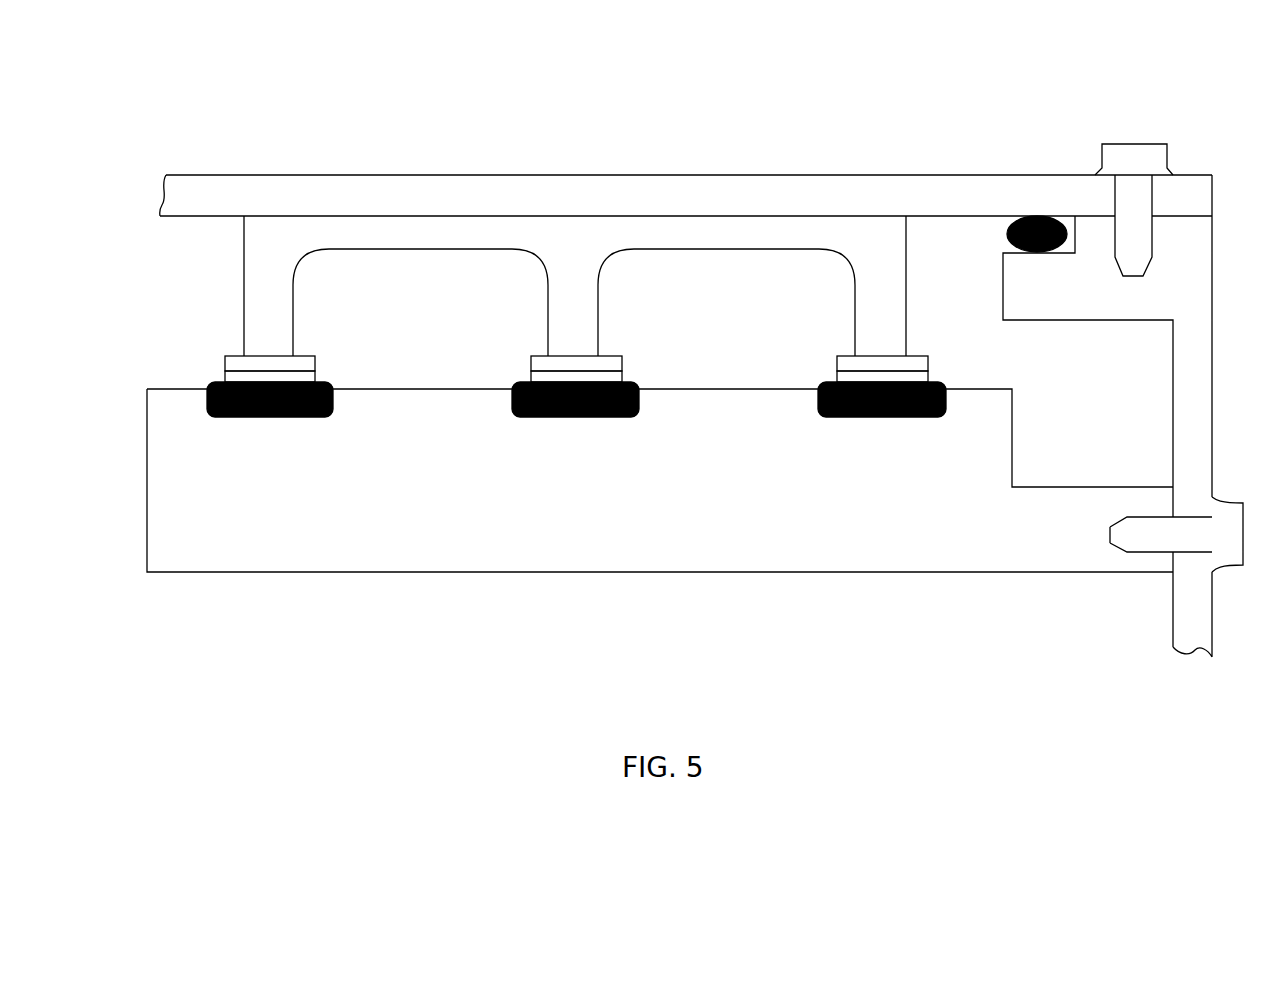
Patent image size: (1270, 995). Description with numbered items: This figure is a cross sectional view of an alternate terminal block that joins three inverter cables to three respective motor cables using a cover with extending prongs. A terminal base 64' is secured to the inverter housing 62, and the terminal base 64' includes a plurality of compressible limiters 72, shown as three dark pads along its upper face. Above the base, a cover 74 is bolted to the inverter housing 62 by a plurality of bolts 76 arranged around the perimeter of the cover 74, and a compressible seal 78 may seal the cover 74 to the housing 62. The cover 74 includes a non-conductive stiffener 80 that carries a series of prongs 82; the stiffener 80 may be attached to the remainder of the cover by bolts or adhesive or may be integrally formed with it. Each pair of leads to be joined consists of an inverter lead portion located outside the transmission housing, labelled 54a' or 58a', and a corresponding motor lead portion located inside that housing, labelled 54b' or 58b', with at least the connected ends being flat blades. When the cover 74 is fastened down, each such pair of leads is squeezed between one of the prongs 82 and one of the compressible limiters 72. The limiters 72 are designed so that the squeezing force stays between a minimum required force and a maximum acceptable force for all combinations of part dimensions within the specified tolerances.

The cover 74 is at (908, 175).
The bolts 76 is at (1140, 143).
The compressible seal 78 is at (1037, 214).
The inverter housing 62 is at (1127, 320).
The terminal base 64' is at (660, 521).
The inverter lead portion 54a' is at (204, 330).
The inverter lead portion 58a' is at (204, 330).
The motor lead portion 54b' is at (621, 343).
The motor lead portion 58b' is at (621, 343).
The compressible limiters 72 is at (298, 417).
The non-conductive stiffener 80 is at (683, 250).
The prongs 82 is at (293, 318).